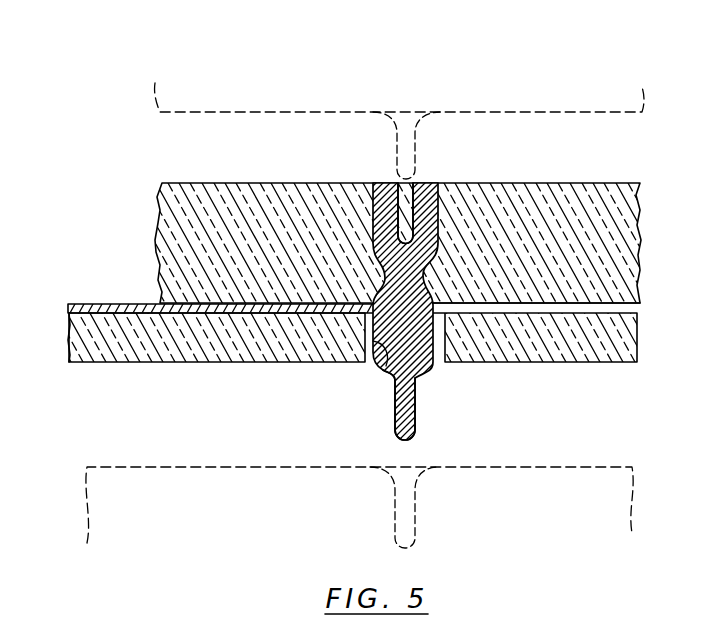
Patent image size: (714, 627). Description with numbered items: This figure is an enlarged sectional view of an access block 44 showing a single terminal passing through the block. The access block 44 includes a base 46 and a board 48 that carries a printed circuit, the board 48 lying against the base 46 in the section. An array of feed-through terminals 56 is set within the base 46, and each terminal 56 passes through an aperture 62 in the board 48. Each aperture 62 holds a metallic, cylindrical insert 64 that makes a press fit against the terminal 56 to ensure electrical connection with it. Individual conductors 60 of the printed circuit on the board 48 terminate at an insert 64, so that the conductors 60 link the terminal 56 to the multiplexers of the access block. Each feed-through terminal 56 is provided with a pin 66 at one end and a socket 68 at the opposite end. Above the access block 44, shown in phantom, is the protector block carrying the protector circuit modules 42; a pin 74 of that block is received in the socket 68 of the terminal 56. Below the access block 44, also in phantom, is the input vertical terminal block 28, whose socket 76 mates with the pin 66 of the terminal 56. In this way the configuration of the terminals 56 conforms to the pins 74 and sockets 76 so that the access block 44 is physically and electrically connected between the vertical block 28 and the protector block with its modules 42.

The protector circuit module 42 is at (522, 112).
The pin 74 is at (395, 137).
The base 46 is at (165, 212).
The conductor 60 is at (118, 304).
The board 48 is at (73, 342).
The access block 44 is at (185, 371).
The cylindrical insert 64 is at (373, 345).
The aperture 62 is at (383, 368).
The feed-through terminal 56 is at (428, 369).
The socket 68 is at (413, 184).
The pin 66 is at (415, 425).
The socket 76 is at (414, 478).
The input vertical terminal block 28 is at (540, 467).